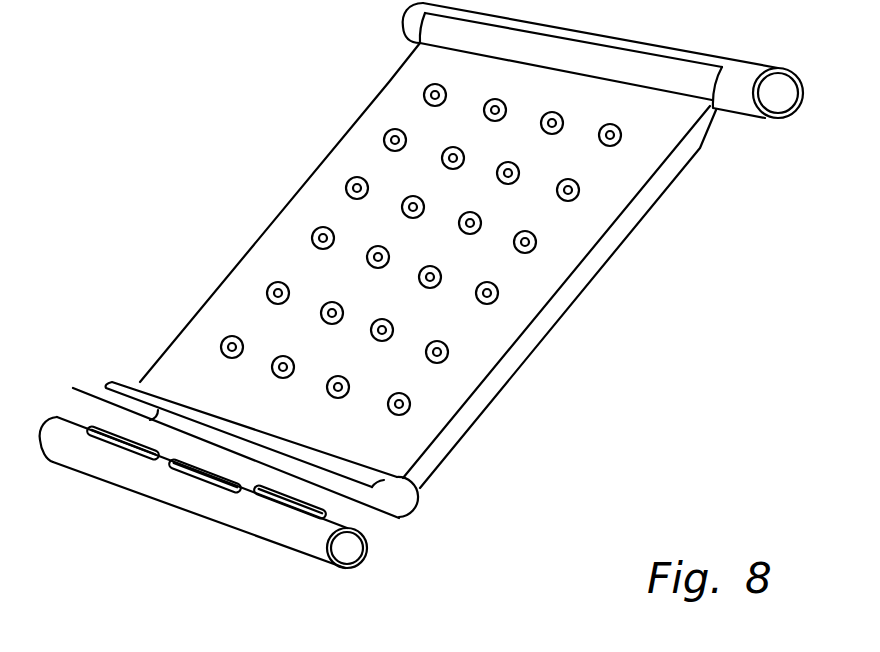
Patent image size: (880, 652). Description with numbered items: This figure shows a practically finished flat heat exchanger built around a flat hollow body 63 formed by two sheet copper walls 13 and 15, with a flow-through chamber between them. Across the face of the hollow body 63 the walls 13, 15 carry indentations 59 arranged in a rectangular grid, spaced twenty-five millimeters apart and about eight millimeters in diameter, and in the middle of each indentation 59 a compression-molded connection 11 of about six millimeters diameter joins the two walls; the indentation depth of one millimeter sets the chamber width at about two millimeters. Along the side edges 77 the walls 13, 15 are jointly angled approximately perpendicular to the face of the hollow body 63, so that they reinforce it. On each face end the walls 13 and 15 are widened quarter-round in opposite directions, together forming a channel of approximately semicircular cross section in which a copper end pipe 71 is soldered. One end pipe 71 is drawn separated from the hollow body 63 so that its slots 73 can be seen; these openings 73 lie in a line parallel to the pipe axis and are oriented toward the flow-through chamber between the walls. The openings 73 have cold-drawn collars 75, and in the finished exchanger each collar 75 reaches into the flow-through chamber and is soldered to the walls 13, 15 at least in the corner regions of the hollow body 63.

The compression-molded connection 11 is at (270, 290).
The wall 13 is at (125, 382).
The wall 15 is at (212, 438).
The indentation 59 is at (347, 181).
The hollow body 63 is at (552, 278).
The end pipe 71 is at (755, 33).
The slot 73 is at (262, 496).
The collar 75 is at (118, 447).
The side edge 77 is at (497, 390).